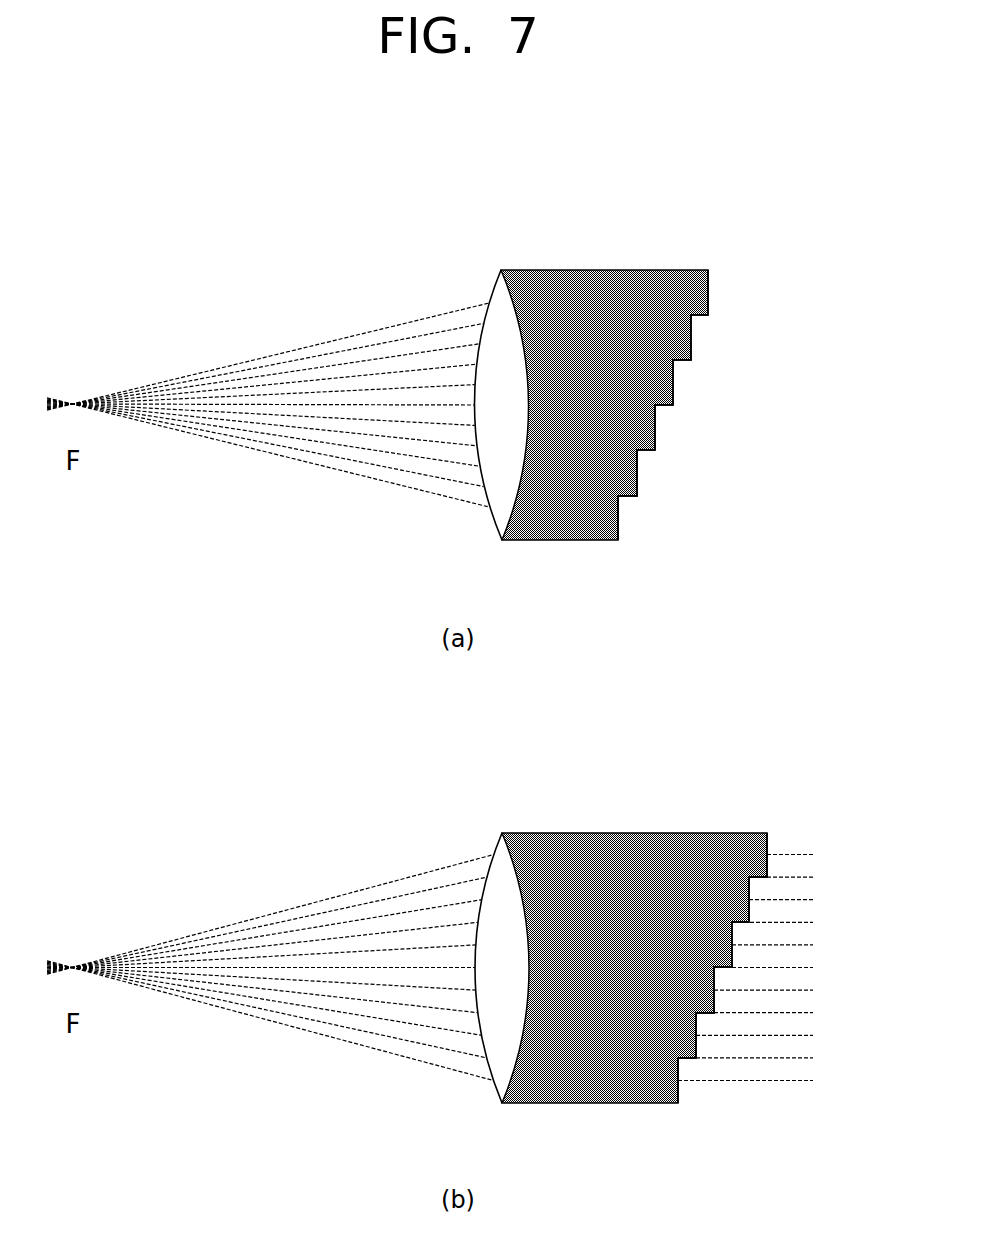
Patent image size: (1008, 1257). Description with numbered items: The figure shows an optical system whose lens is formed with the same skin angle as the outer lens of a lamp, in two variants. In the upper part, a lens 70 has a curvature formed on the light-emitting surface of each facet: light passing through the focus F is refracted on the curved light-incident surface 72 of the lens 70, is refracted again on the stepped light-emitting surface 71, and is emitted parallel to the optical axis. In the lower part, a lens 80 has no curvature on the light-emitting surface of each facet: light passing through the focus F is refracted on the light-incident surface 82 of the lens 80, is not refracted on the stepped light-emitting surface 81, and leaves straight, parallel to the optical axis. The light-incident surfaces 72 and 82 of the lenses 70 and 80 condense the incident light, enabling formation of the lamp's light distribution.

The lens 70 is at (592, 285).
The light-emitting surface 71 is at (715, 300).
The light-incident surface 72 is at (498, 270).
The lens 80 is at (592, 848).
The light-emitting surface 81 is at (772, 862).
The light-incident surface 82 is at (498, 832).